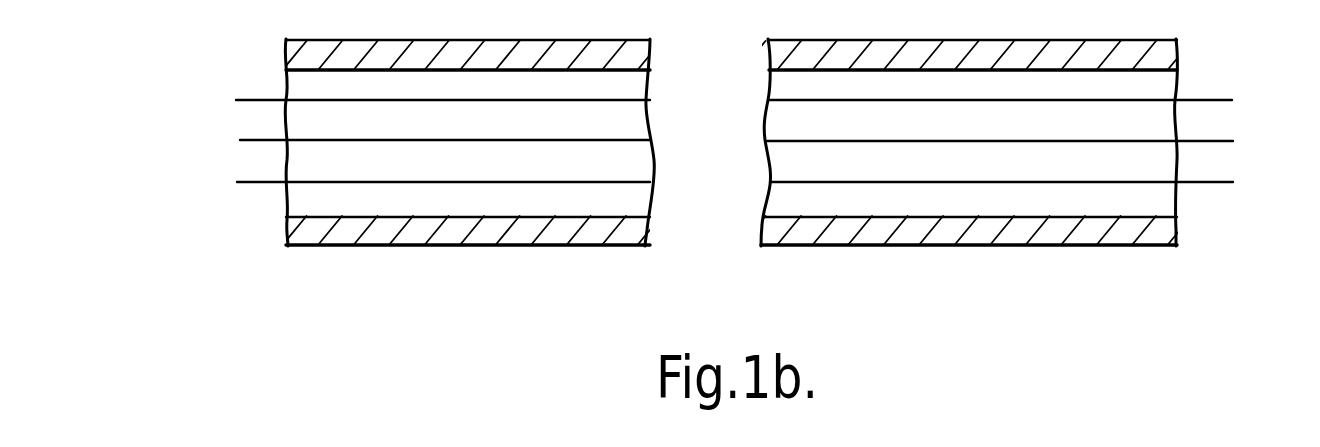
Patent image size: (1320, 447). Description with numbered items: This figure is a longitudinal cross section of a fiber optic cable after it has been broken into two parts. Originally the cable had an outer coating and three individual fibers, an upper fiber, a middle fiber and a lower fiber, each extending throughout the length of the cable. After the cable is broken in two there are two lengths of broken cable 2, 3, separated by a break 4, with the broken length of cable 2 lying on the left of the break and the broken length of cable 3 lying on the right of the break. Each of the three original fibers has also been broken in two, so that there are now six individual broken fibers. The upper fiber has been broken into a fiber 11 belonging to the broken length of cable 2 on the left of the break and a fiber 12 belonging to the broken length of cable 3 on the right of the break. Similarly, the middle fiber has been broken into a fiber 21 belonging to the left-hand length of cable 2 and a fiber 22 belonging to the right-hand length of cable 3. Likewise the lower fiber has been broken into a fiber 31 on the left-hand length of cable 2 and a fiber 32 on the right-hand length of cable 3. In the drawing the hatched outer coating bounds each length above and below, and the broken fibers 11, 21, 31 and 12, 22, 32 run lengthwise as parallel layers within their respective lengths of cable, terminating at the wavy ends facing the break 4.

The broken length of cable 2 is at (423, 187).
The broken length of cable 3 is at (1018, 187).
The break 4 is at (719, 220).
The broken fiber 11 is at (270, 99).
The broken fiber 21 is at (248, 140).
The broken fiber 31 is at (257, 182).
The broken fiber 12 is at (1221, 99).
The broken fiber 22 is at (1233, 141).
The broken fiber 32 is at (1231, 183).